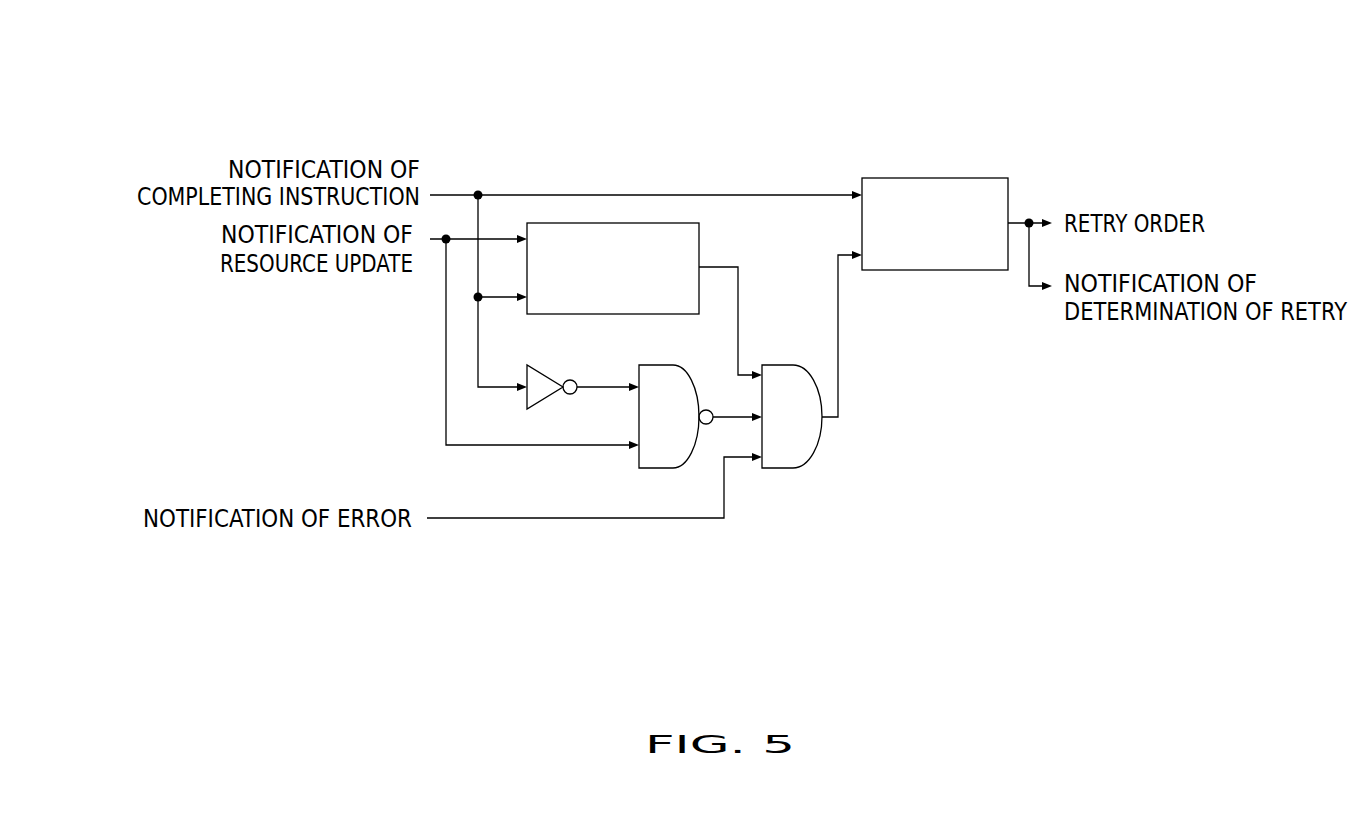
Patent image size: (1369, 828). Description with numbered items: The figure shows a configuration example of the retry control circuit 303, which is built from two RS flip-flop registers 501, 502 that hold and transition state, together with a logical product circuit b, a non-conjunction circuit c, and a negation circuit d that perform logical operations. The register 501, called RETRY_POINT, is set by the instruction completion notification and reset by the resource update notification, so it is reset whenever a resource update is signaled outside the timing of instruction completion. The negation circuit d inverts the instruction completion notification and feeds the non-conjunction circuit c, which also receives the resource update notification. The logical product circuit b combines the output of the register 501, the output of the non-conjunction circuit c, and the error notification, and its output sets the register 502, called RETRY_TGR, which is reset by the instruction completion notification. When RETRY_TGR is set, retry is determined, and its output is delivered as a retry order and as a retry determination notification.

The retry control circuit 303 is at (732, 113).
The register 501 is at (570, 222).
The register 502 is at (943, 178).
The logical product circuit b is at (812, 455).
The non-conjunction circuit c is at (658, 363).
The negation circuit d is at (548, 373).